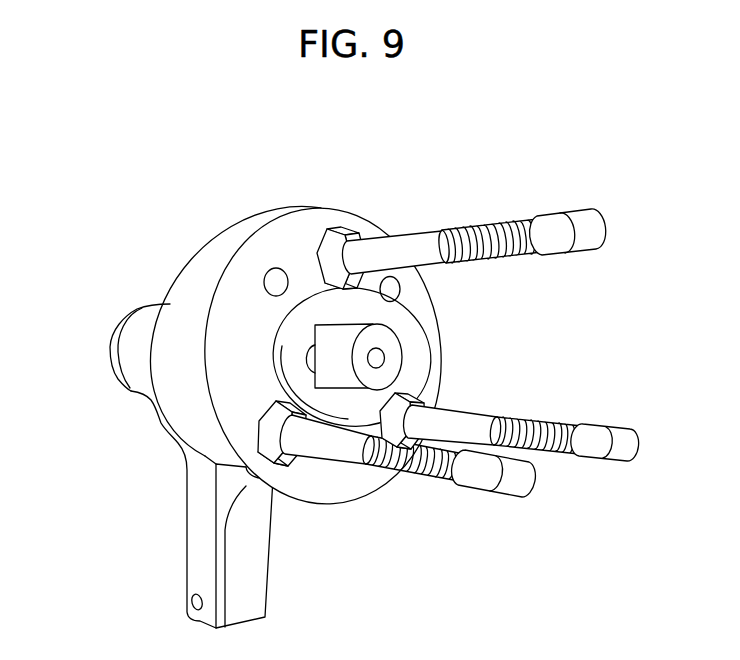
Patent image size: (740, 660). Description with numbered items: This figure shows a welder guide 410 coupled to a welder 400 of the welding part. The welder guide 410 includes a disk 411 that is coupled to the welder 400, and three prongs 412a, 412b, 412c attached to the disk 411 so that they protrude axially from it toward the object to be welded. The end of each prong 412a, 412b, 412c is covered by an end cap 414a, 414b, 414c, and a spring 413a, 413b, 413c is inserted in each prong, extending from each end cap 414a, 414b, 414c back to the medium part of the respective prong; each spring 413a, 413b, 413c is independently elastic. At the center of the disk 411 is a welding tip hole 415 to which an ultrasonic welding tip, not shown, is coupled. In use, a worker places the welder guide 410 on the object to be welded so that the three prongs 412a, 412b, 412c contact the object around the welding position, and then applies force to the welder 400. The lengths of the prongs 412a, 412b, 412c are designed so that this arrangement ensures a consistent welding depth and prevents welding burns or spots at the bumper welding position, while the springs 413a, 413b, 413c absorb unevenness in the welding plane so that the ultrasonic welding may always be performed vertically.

The welder 400 is at (122, 320).
The welder guide 410 is at (256, 202).
The disk 411 is at (290, 250).
The prong 412a is at (421, 241).
The spring 413a is at (488, 228).
The end cap 414a is at (580, 223).
The prong 412b is at (345, 447).
The spring 413b is at (420, 473).
The end cap 414b is at (508, 477).
The prong 412c is at (473, 427).
The spring 413c is at (538, 422).
The end cap 414c is at (617, 443).
The welding tip hole 415 is at (390, 348).